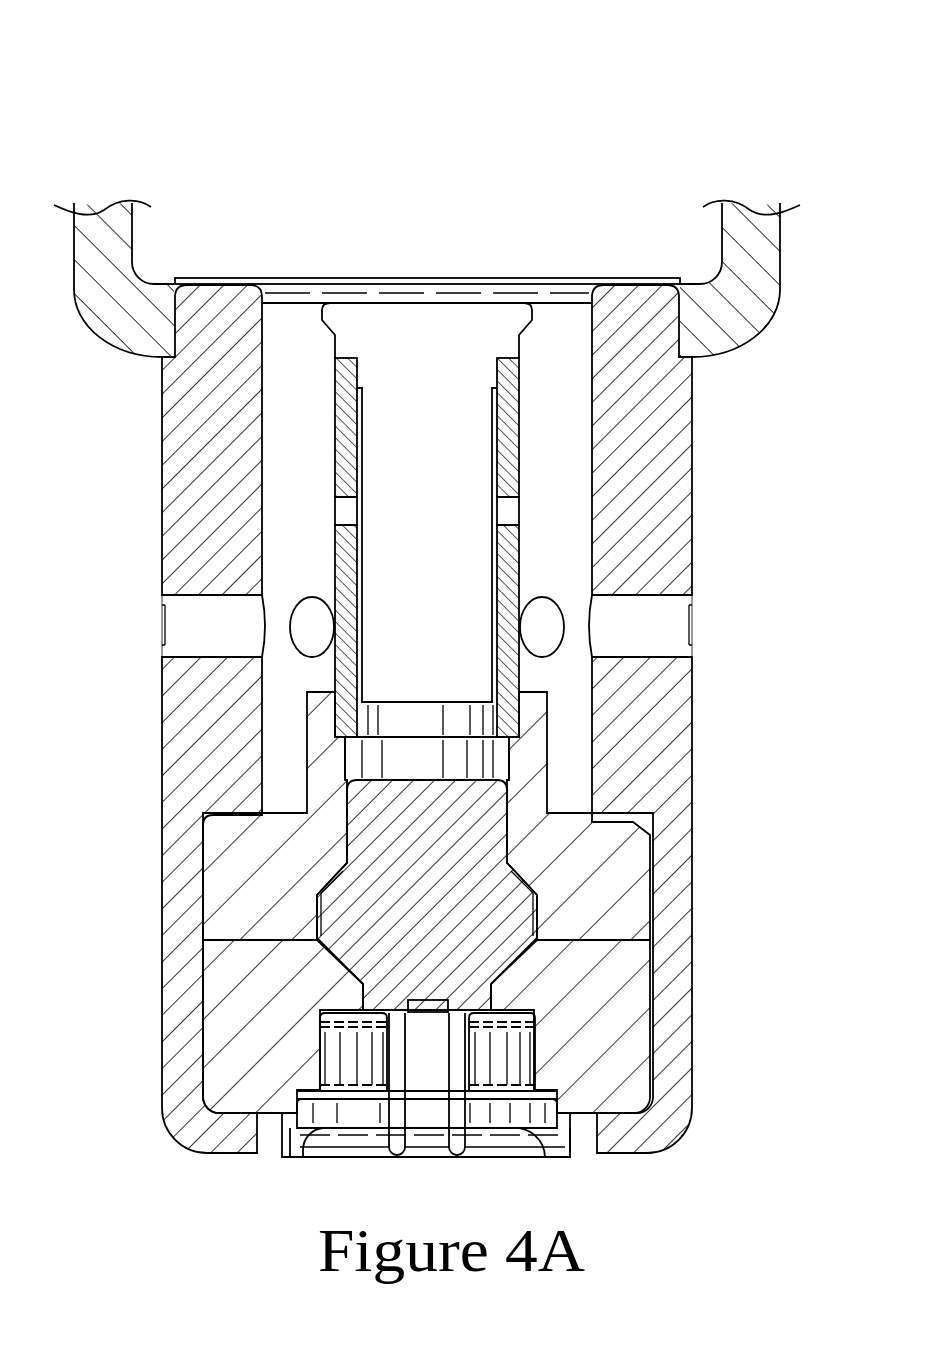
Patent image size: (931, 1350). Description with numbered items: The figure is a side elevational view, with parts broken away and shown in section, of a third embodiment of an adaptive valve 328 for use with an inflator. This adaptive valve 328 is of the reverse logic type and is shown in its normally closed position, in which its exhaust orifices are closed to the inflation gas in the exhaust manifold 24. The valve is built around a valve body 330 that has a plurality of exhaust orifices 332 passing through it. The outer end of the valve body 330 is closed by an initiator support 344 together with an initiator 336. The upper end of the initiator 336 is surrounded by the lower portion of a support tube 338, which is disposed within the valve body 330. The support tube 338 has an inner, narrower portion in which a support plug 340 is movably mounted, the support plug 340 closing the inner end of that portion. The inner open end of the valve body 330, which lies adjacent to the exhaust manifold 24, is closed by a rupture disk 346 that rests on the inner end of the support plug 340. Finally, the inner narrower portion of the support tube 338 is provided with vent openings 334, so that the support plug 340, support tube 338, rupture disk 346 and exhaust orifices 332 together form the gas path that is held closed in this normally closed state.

The adaptive valve 328 is at (96, 102).
The exhaust manifold 24 is at (750, 215).
The rupture disk 346 is at (230, 276).
The support plug 340 is at (383, 327).
The valve body 330 is at (200, 447).
The support tube 338 is at (333, 547).
The vent openings 334 is at (512, 513).
The exhaust orifices 332 is at (662, 625).
The initiator 336 is at (480, 903).
The initiator support 344 is at (243, 1018).